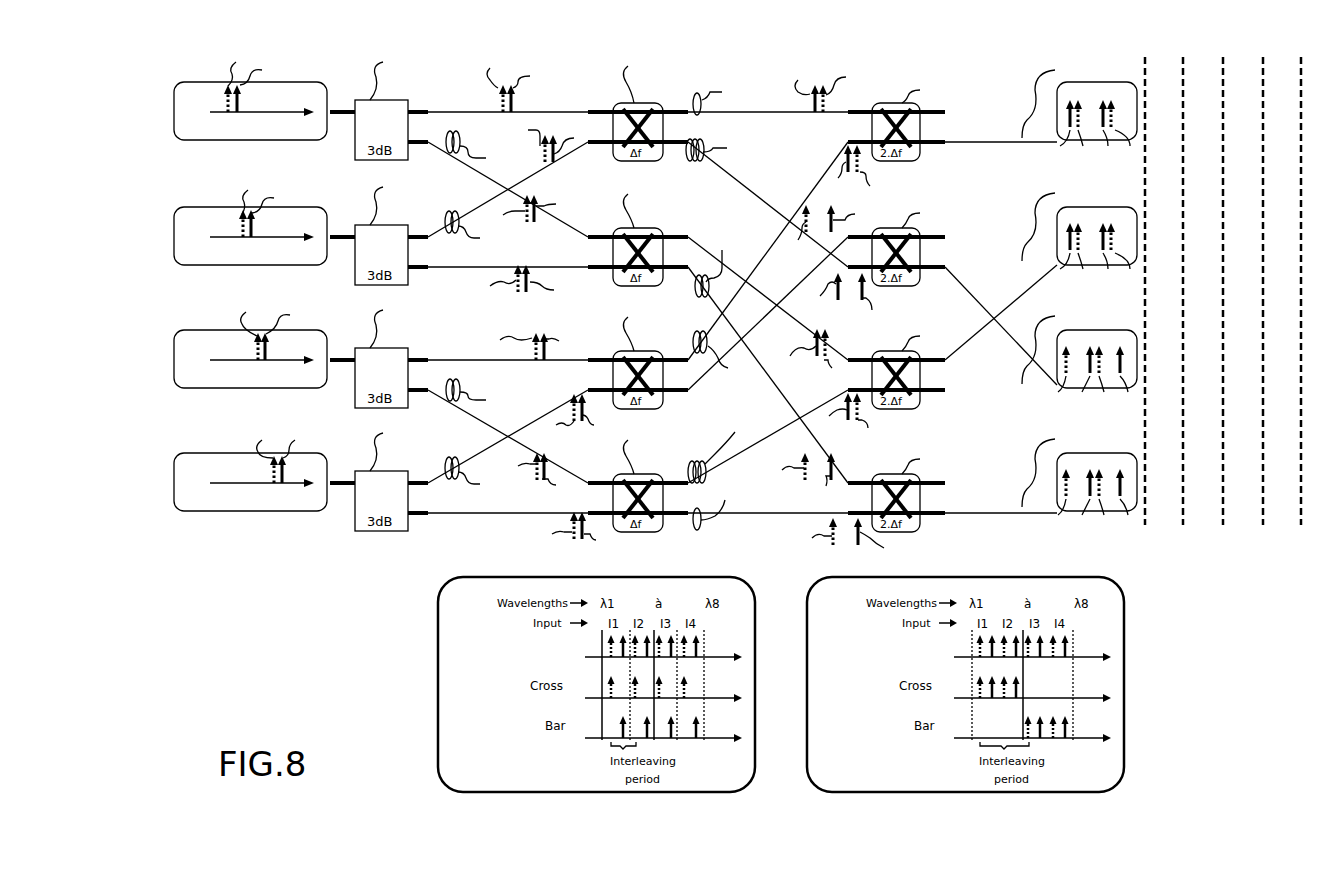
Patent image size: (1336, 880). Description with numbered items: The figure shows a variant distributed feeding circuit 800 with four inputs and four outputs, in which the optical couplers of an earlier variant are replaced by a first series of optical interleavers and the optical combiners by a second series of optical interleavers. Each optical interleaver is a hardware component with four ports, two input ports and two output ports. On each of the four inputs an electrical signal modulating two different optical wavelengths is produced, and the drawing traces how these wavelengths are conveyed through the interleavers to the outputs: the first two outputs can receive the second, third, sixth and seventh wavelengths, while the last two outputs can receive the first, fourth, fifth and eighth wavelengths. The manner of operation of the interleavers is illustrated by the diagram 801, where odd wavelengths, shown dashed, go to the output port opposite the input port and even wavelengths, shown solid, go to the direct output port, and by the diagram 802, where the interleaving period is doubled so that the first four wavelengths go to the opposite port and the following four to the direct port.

The distributed feeding circuit 800 is at (934, 57).
The diagram 801 is at (438, 678).
The diagram 802 is at (1125, 658).